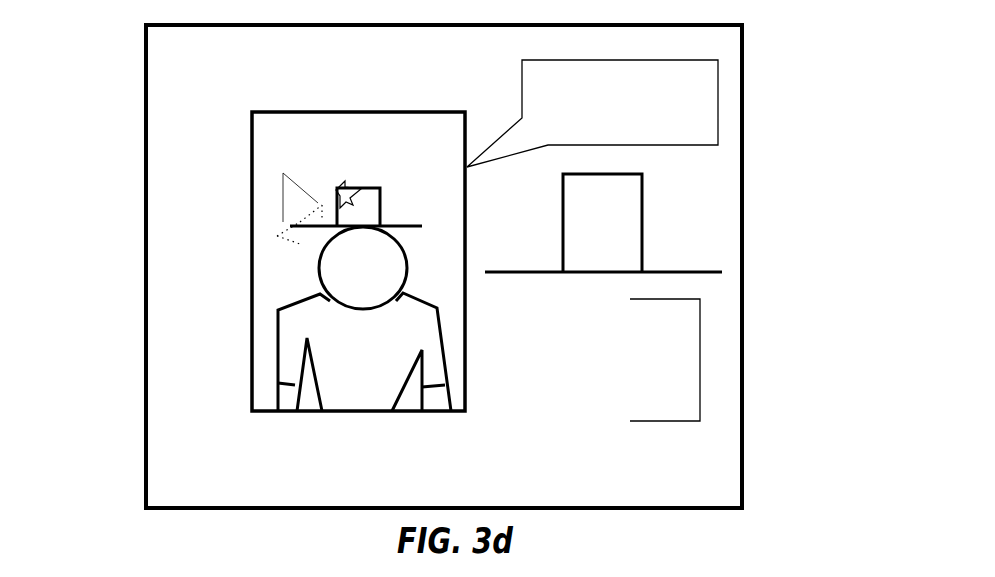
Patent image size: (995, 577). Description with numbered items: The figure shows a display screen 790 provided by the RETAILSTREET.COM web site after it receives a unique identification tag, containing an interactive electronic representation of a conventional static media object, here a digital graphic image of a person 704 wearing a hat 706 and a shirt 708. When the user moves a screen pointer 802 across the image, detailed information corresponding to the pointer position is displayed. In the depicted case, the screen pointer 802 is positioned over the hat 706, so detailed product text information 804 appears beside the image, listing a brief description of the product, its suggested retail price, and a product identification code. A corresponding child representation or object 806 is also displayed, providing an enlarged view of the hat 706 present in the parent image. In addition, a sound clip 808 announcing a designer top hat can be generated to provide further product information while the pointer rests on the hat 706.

The display screen 790 is at (190, 97).
The person 704 is at (424, 249).
The hat 706 is at (374, 187).
The shirt 708 is at (290, 337).
The screen pointer 802 is at (342, 185).
The detailed product text information 804 is at (700, 355).
The child representation or object 806 is at (642, 217).
The sound clip 808 is at (718, 90).